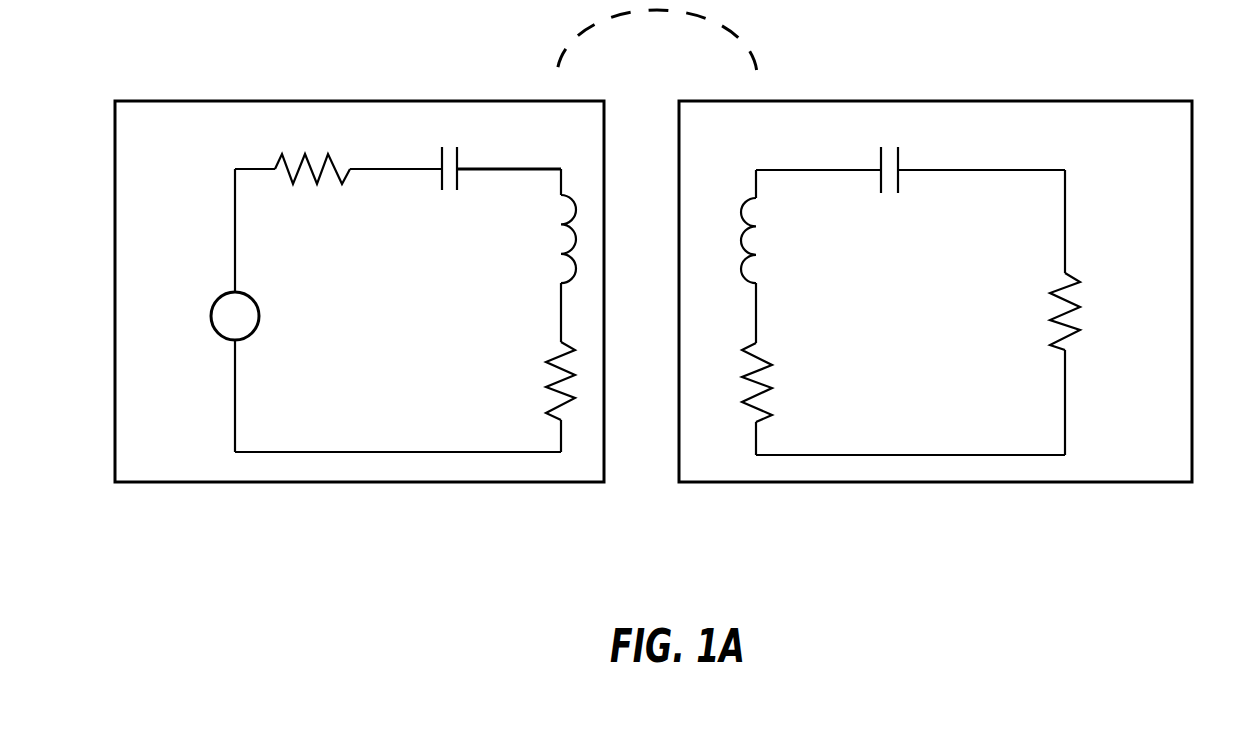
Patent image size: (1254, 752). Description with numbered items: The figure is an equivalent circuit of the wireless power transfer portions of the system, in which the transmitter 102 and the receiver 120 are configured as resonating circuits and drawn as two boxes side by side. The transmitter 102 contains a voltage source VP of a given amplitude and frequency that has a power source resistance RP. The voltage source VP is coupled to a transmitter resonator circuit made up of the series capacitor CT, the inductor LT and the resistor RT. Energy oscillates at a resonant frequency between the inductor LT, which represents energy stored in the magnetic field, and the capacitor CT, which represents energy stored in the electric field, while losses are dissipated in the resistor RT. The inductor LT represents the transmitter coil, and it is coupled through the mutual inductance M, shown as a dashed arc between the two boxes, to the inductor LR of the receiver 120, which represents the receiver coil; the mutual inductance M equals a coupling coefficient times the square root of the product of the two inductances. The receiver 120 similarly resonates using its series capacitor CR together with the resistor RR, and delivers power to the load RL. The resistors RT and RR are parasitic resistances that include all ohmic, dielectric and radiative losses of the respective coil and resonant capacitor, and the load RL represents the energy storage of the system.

The transmitter 102 is at (181, 137).
The receiver 120 is at (1140, 140).
The mutual inductance M is at (657, 43).
The power source resistance RP is at (312, 147).
The capacitor CT is at (450, 150).
The inductor LT is at (546, 239).
The resistor RT is at (541, 381).
The voltage source VP is at (215, 316).
The capacitor CR is at (890, 154).
The inductor LR is at (772, 240).
The resistor RR is at (774, 382).
The load RL is at (1086, 311).